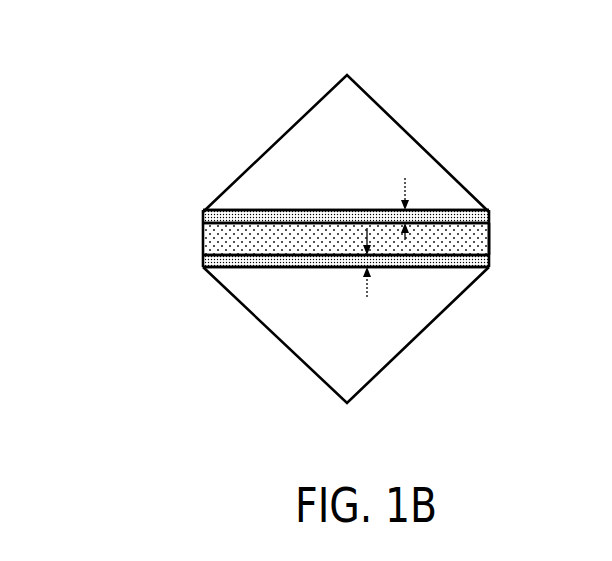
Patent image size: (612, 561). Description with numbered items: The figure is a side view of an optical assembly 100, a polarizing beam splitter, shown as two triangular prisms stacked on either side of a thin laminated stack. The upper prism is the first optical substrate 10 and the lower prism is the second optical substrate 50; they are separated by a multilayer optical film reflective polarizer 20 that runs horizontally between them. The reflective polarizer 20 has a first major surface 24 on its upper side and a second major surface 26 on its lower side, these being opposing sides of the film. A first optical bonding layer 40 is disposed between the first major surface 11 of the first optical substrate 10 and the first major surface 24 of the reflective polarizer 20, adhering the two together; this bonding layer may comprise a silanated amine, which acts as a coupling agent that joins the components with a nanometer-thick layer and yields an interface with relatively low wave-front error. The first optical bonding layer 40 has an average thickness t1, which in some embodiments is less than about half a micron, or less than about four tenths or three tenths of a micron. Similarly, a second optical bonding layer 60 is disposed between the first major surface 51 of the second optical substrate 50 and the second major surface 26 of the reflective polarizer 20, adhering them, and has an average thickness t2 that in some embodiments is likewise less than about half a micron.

The optical assembly 100 is at (217, 98).
The first optical substrate 10 is at (283, 140).
The first major surface of the first optical substrate 11 is at (250, 209).
The first optical bonding layer 40 is at (203, 216).
The reflective polarizer 20 is at (203, 240).
The first major surface of the reflective polarizer 24 is at (489, 232).
The second major surface of the reflective polarizer 26 is at (489, 246).
The second optical bonding layer 60 is at (203, 262).
The first major surface of the second optical substrate 51 is at (253, 270).
The second optical substrate 50 is at (264, 323).
The average thickness of the first optical bonding layer t1 is at (418, 209).
The average thickness of the second optical bonding layer t2 is at (380, 263).